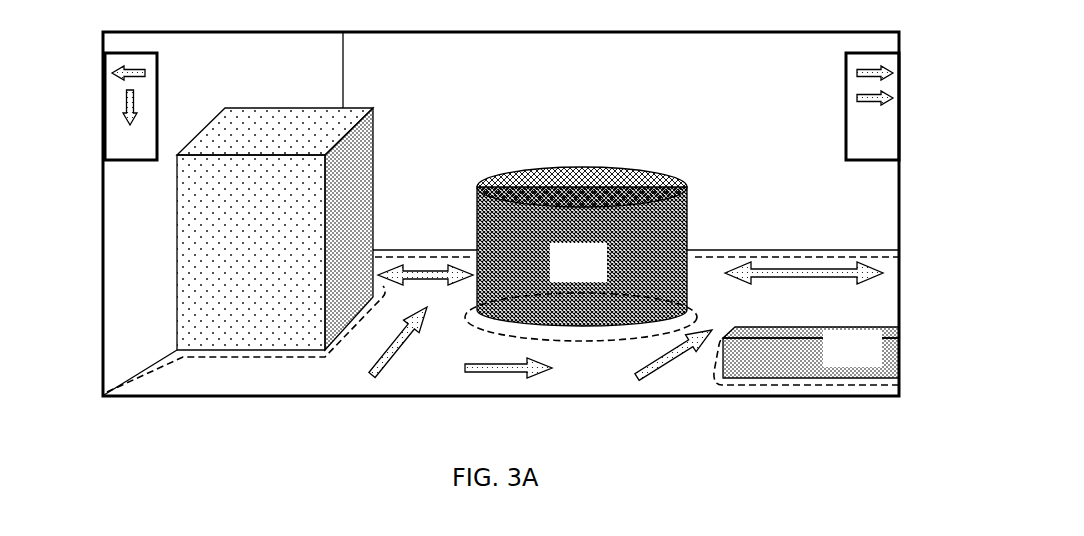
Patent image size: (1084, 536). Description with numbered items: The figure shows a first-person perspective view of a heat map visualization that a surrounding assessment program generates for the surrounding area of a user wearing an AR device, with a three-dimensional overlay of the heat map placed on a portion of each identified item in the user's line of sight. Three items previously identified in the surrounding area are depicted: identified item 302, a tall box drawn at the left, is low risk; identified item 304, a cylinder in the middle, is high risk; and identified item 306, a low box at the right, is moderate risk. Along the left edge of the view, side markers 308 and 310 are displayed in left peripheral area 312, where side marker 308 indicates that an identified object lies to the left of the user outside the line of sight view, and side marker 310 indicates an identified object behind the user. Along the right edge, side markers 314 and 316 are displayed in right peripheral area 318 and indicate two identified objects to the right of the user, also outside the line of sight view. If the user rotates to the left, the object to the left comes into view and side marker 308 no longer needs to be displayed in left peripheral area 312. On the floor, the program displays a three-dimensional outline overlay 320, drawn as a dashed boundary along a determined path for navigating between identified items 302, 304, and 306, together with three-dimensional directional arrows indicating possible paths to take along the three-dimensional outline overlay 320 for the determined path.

The identified item 302 is at (275, 229).
The identified item 304 is at (581, 254).
The identified item 306 is at (806, 356).
The side marker 308 is at (112, 75).
The side marker 310 is at (125, 120).
The left peripheral area 312 is at (130, 161).
The side marker 314 is at (893, 80).
The side marker 316 is at (893, 105).
The right peripheral area 318 is at (868, 160).
The three-dimensional outline overlay 320 is at (243, 354).